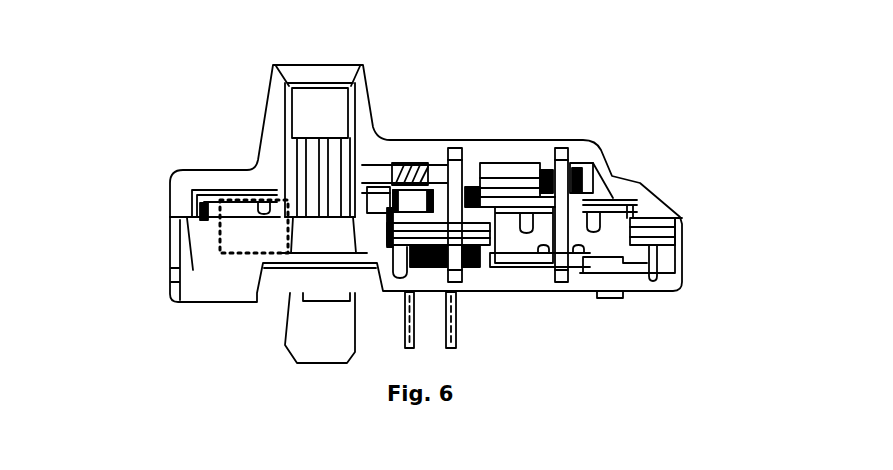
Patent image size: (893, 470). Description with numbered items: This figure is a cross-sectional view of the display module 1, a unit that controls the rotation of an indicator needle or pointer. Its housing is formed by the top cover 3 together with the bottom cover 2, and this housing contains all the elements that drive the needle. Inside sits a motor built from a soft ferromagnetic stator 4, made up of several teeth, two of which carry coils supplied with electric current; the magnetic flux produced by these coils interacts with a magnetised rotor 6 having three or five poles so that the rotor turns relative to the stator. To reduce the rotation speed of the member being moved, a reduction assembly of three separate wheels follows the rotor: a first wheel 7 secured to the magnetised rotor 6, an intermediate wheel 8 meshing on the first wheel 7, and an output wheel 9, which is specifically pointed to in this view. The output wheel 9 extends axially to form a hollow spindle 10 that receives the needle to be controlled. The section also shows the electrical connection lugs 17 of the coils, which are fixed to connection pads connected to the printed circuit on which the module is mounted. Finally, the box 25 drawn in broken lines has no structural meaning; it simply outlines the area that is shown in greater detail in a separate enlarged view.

The display module 1 is at (192, 95).
The bottom cover 2 is at (643, 307).
The top cover 3 is at (420, 152).
The soft ferromagnetic stator 4 is at (653, 255).
The magnetised rotor 6 is at (620, 242).
The first wheel 7 is at (583, 190).
The intermediate wheel 8 is at (477, 195).
The output wheel 9 is at (193, 213).
The hollow spindle 10 is at (345, 124).
The electrical connection lugs 17 is at (410, 357).
The box in broken lines 25 is at (233, 255).